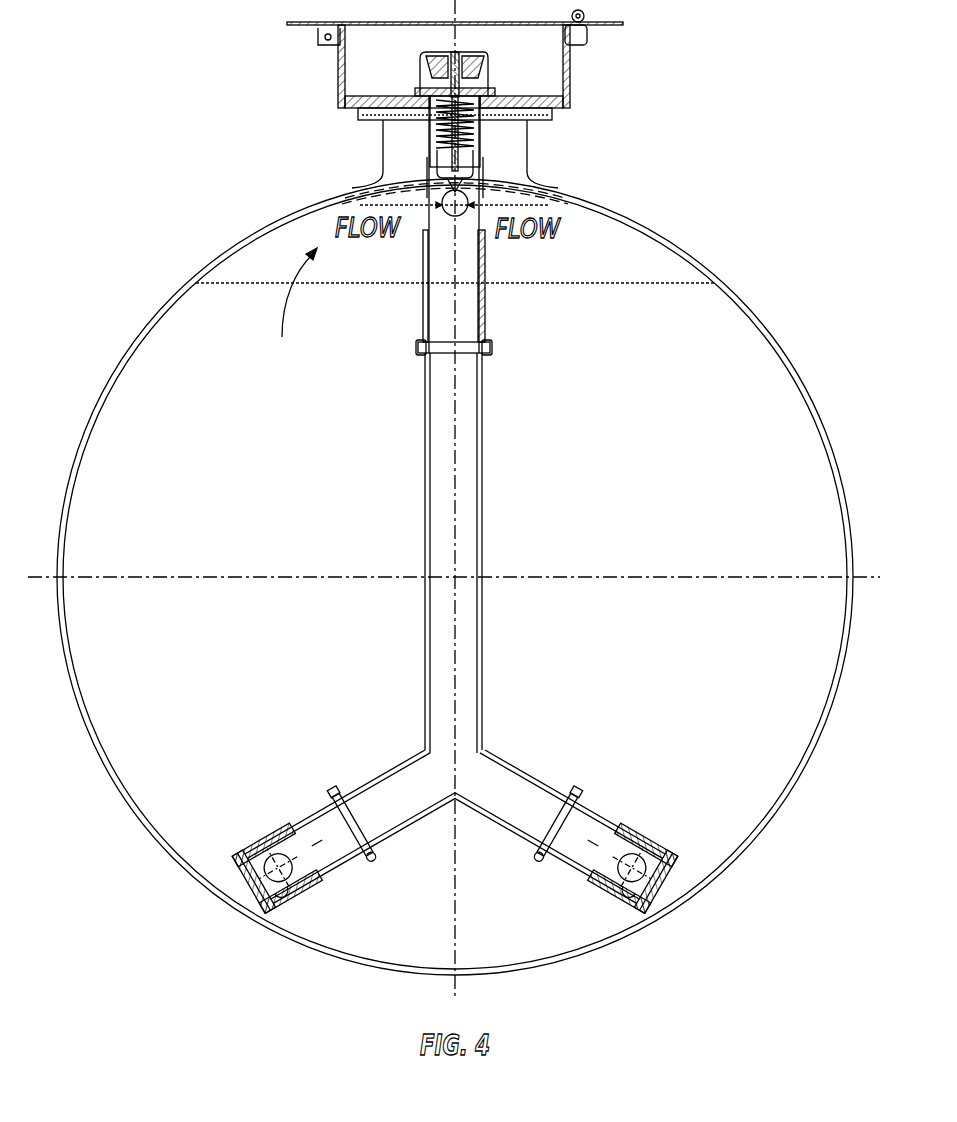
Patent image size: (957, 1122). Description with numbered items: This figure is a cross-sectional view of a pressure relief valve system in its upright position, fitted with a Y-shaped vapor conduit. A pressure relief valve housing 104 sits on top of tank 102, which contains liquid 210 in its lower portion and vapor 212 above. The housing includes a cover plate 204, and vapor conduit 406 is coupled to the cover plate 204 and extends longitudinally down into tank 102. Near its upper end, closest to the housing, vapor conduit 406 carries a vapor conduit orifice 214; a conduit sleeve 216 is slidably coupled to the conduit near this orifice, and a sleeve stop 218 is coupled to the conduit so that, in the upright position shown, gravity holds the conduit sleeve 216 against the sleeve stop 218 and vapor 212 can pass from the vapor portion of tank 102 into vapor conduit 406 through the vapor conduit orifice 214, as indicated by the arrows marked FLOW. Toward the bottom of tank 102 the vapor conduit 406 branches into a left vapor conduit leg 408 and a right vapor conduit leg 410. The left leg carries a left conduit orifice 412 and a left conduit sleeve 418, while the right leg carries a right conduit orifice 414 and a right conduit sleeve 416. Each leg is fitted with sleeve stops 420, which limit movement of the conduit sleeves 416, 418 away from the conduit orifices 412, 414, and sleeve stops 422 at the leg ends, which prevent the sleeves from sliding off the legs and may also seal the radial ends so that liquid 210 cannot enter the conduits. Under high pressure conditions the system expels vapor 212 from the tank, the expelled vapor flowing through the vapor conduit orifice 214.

The tank 102 is at (778, 342).
The pressure relief valve housing 104 is at (567, 73).
The cover plate 204 is at (568, 103).
The liquid 210 is at (272, 712).
The vapor 212 is at (298, 394).
The vapor conduit orifice 214 is at (465, 198).
The conduit sleeve 216 is at (487, 295).
The sleeve stop 218 is at (490, 350).
The vapor conduit 406 is at (480, 465).
The left vapor conduit leg 408 is at (402, 825).
The right vapor conduit leg 410 is at (503, 827).
The left conduit orifice 412 is at (293, 897).
The right conduit orifice 414 is at (632, 875).
The right conduit sleeve 416 is at (628, 823).
The left conduit sleeve 418 is at (257, 840).
The sleeve stop 420 is at (340, 795).
The sleeve stop 422 is at (237, 872).